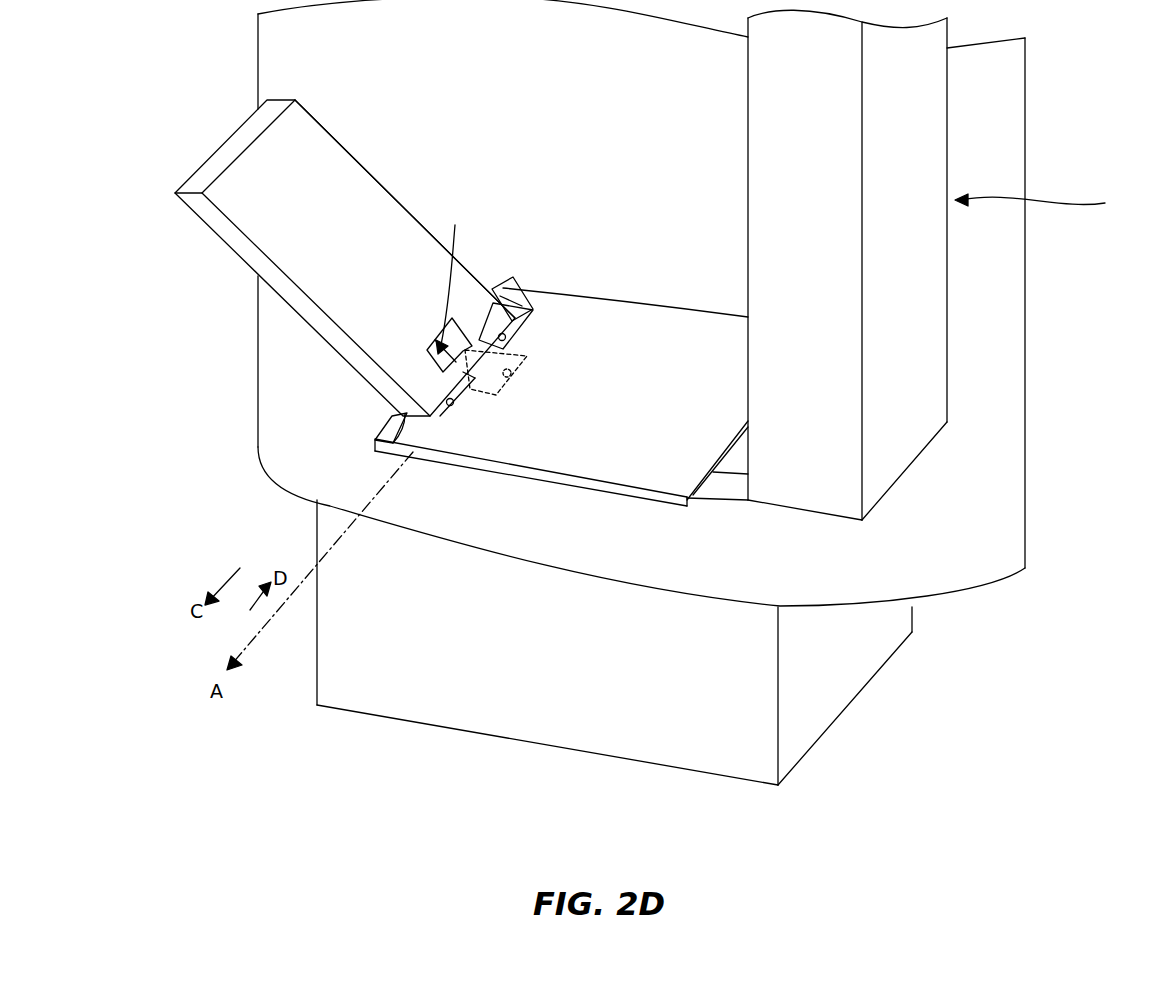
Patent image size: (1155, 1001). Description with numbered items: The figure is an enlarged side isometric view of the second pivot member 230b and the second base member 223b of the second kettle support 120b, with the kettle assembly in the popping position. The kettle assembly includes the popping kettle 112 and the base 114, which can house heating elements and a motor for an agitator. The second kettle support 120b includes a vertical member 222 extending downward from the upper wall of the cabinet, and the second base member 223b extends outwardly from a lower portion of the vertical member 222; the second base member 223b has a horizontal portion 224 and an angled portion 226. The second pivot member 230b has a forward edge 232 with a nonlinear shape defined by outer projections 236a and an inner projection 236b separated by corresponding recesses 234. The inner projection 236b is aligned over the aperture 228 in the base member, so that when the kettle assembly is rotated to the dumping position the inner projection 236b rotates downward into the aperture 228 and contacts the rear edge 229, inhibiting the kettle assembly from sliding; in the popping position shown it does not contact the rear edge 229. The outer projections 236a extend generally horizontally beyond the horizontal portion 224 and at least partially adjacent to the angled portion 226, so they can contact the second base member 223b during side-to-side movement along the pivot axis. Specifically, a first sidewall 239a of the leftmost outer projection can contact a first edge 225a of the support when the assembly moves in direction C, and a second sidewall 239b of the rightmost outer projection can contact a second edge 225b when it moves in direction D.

The popping kettle 112 is at (1018, 536).
The base 114 is at (845, 680).
The second kettle support 120b is at (1055, 203).
The vertical member 222 is at (918, 311).
The second base member 223b is at (724, 480).
The horizontal portion 224 is at (530, 303).
The first edge 225a is at (245, 253).
The second edge 225b is at (368, 168).
The angled portion 226 is at (289, 153).
The aperture 228 is at (457, 276).
The rear edge 229 is at (520, 375).
The second pivot member 230b is at (576, 480).
The forward edge 232 is at (375, 440).
The recesses 234 is at (506, 337).
The outer projections 236a is at (494, 296).
The inner projection 236b is at (427, 348).
The first sidewall 239a is at (397, 448).
The second sidewall 239b is at (507, 305).